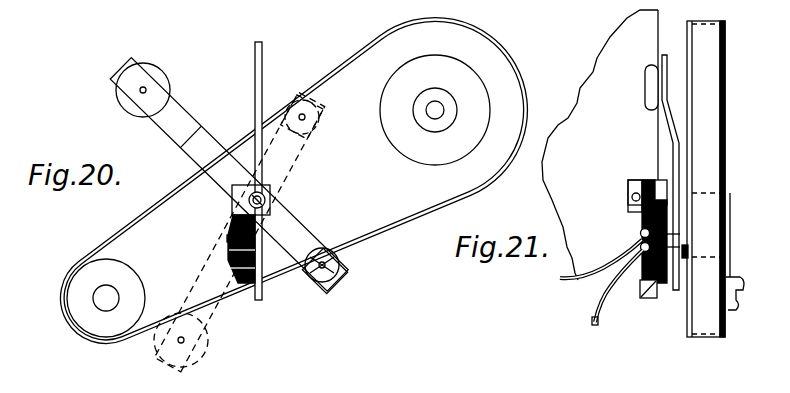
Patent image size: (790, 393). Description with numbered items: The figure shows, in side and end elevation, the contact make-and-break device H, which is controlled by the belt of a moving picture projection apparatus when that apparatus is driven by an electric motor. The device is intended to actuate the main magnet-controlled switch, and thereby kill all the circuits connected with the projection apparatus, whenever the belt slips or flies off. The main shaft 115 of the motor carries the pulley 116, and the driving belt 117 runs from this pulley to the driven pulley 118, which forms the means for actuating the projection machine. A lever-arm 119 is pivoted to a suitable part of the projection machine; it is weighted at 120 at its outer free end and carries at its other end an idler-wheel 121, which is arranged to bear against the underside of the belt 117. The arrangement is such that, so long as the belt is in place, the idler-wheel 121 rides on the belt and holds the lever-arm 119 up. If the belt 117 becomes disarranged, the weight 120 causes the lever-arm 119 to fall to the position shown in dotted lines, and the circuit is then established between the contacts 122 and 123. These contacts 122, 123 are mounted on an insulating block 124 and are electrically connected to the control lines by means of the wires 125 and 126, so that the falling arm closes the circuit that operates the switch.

In FIG. 20, the main shaft of the motor 115 is at (103, 296).
In FIG. 21, the main shaft of the motor 115 is at (733, 310).
In FIG. 20, the pulley 116 is at (88, 323).
In FIG. 21, the pulley 116 is at (690, 330).
In FIG. 20, the driving belt 117 is at (388, 226).
In FIG. 21, the driving belt 117 is at (717, 193).
In FIG. 20, the driven pulley 118 is at (387, 53).
In FIG. 21, the driven pulley 118 is at (743, 15).
In FIG. 20, the lever-arm 119 is at (282, 222).
In FIG. 21, the lever-arm 119 is at (677, 152).
In FIG. 20, the weight 120 is at (128, 104).
In FIG. 21, the weight 120 is at (646, 100).
In FIG. 20, the idler-wheel 121 is at (318, 282).
In FIG. 21, the idler-wheel 121 is at (723, 252).
In FIG. 20, the contact 122 is at (228, 238).
In FIG. 21, the contact 122 is at (640, 232).
In FIG. 20, the contact 123 is at (236, 253).
In FIG. 21, the contact 123 is at (640, 243).
In FIG. 20, the insulating block 124 is at (234, 270).
In FIG. 21, the insulating block 124 is at (604, 297).
In FIG. 21, the wire 125 is at (560, 280).
In FIG. 21, the wire 126 is at (592, 322).
In FIG. 20, the contact make-and-break device H is at (214, 243).
In FIG. 21, the contact make-and-break device H is at (624, 225).